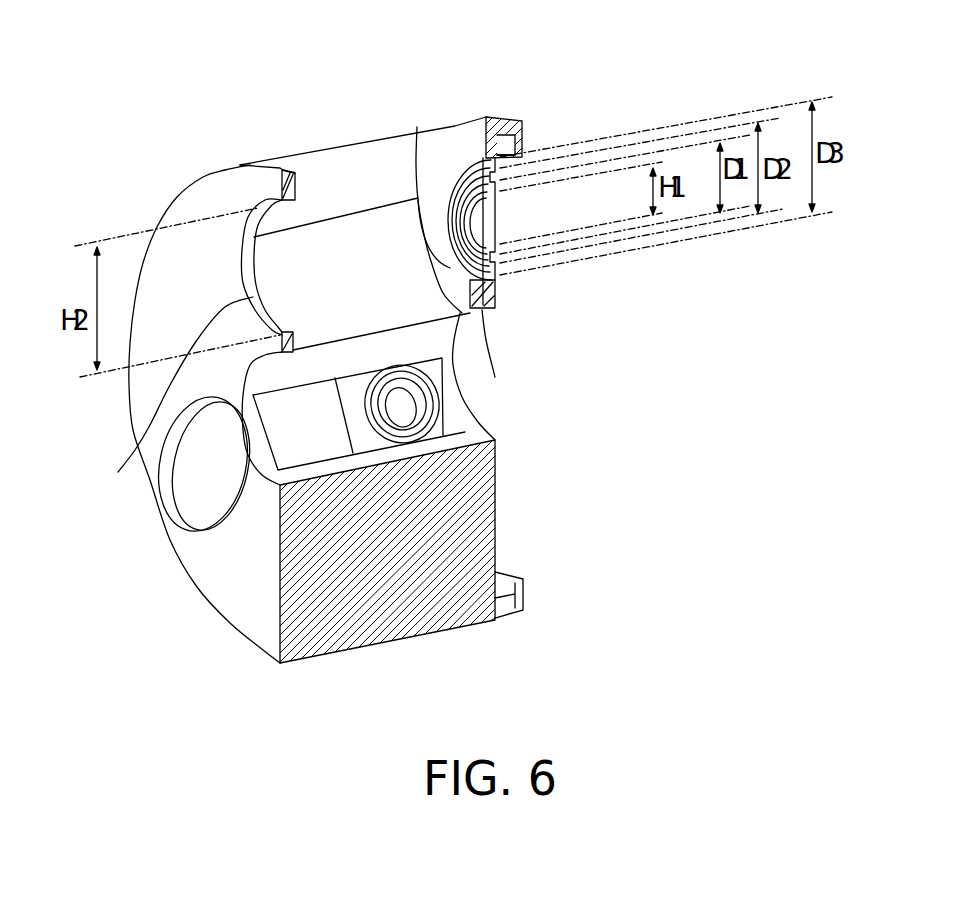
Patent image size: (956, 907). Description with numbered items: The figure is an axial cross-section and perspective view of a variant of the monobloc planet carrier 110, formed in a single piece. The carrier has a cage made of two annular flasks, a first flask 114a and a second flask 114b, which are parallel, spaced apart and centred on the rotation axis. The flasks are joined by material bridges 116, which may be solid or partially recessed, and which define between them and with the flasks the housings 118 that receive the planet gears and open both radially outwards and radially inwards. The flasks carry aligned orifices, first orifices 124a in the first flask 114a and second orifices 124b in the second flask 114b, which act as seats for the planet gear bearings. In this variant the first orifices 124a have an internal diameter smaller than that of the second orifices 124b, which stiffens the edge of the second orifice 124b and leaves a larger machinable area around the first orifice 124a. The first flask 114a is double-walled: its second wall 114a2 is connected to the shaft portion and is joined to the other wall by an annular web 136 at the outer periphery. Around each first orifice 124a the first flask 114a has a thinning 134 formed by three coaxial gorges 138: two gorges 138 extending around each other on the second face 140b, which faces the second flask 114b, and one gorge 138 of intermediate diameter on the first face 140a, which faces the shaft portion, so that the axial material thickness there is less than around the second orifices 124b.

The planet carrier 110 is at (502, 93).
The first flask 114a is at (440, 147).
The second wall 114a2 is at (522, 147).
The second flask 114b is at (228, 191).
The material bridges 116 is at (302, 163).
The housings 118 is at (340, 163).
The first orifices 124a is at (480, 233).
The second orifices 124b is at (195, 445).
The thinning 134 is at (500, 300).
The annular web 136 is at (497, 118).
The gorges 138 is at (497, 173).
The first face 140a is at (512, 283).
The second face 140b is at (450, 268).